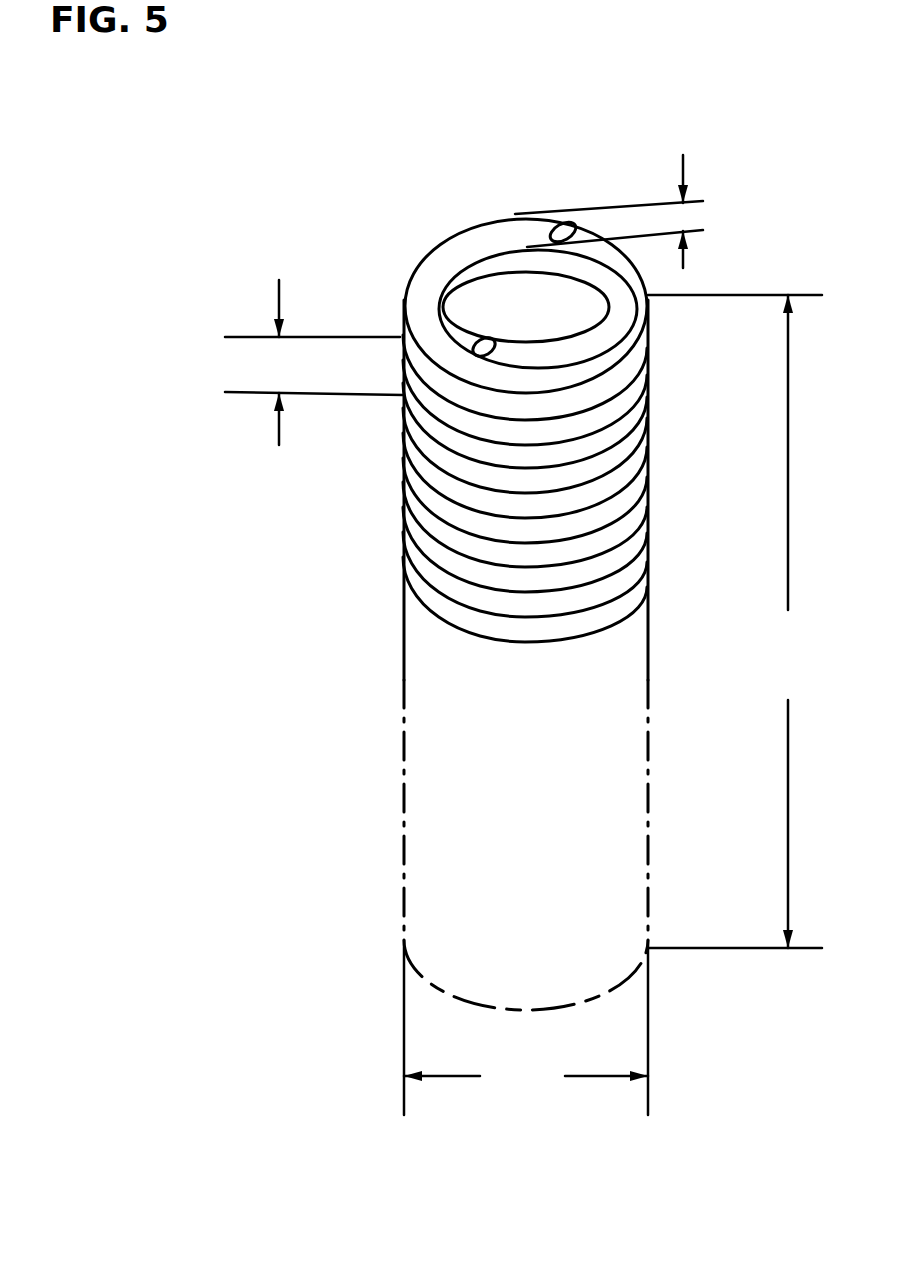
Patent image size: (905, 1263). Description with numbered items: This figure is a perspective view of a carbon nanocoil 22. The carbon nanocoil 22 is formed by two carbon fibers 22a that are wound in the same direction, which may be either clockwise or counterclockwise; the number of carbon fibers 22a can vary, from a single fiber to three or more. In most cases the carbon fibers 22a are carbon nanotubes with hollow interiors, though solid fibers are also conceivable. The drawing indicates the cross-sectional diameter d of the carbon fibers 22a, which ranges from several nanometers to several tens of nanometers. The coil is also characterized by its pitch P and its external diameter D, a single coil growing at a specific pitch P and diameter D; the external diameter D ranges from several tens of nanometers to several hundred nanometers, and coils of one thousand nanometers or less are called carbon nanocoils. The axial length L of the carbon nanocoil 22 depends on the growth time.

The carbon nanocoil 22 is at (455, 788).
The carbon fibers 22a is at (538, 355).
The pitch P is at (314, 345).
The cross-sectional diameter d is at (623, 205).
The axial length L is at (735, 621).
The external diameter D is at (526, 1027).